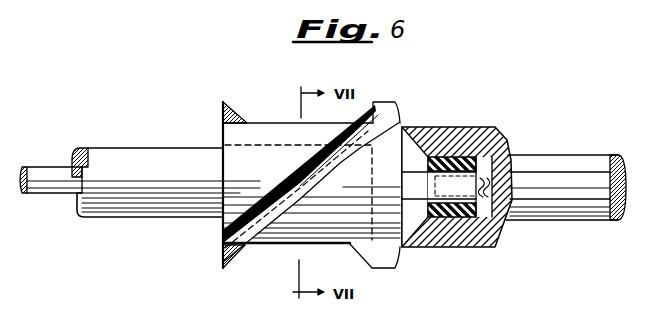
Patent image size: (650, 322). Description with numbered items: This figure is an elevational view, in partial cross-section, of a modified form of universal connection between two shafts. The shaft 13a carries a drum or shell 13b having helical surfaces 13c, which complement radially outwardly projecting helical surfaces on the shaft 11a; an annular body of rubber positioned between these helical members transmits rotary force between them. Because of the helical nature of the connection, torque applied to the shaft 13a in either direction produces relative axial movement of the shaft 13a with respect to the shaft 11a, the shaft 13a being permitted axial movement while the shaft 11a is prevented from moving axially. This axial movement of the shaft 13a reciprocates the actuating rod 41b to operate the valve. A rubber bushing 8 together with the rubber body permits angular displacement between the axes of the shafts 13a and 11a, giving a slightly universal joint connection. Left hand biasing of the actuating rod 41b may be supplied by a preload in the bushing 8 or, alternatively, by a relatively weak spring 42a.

The actuating rod 41b is at (42, 160).
The shaft 11a is at (118, 205).
The drum or shell 13b is at (222, 142).
The helical surfaces 13c is at (292, 176).
The rubber bushing 8 is at (448, 228).
The spring 42a is at (484, 198).
The shaft 13a is at (585, 222).